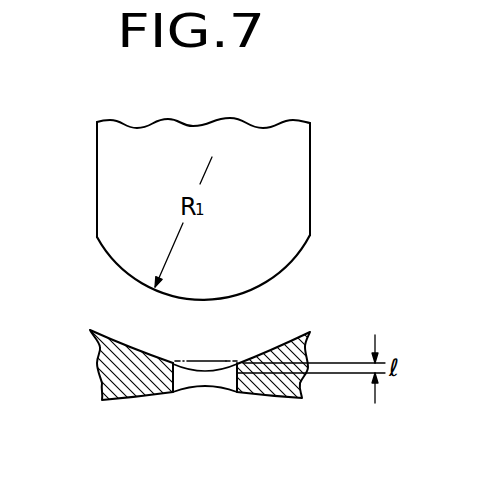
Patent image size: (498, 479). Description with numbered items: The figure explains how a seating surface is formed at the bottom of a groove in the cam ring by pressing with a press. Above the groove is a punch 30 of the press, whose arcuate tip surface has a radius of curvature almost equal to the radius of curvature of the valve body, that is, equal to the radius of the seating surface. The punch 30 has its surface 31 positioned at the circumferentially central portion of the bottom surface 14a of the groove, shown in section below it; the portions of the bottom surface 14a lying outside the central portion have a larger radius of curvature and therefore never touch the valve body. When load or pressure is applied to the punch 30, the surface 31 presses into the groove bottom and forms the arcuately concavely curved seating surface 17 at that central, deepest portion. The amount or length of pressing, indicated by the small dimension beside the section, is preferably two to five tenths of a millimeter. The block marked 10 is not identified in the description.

The punch 30 is at (298, 173).
The surface 31 is at (277, 278).
The substrate block 10 is at (205, 381).
The seating surface 17 is at (188, 360).
The bottom surface 14a is at (208, 359).